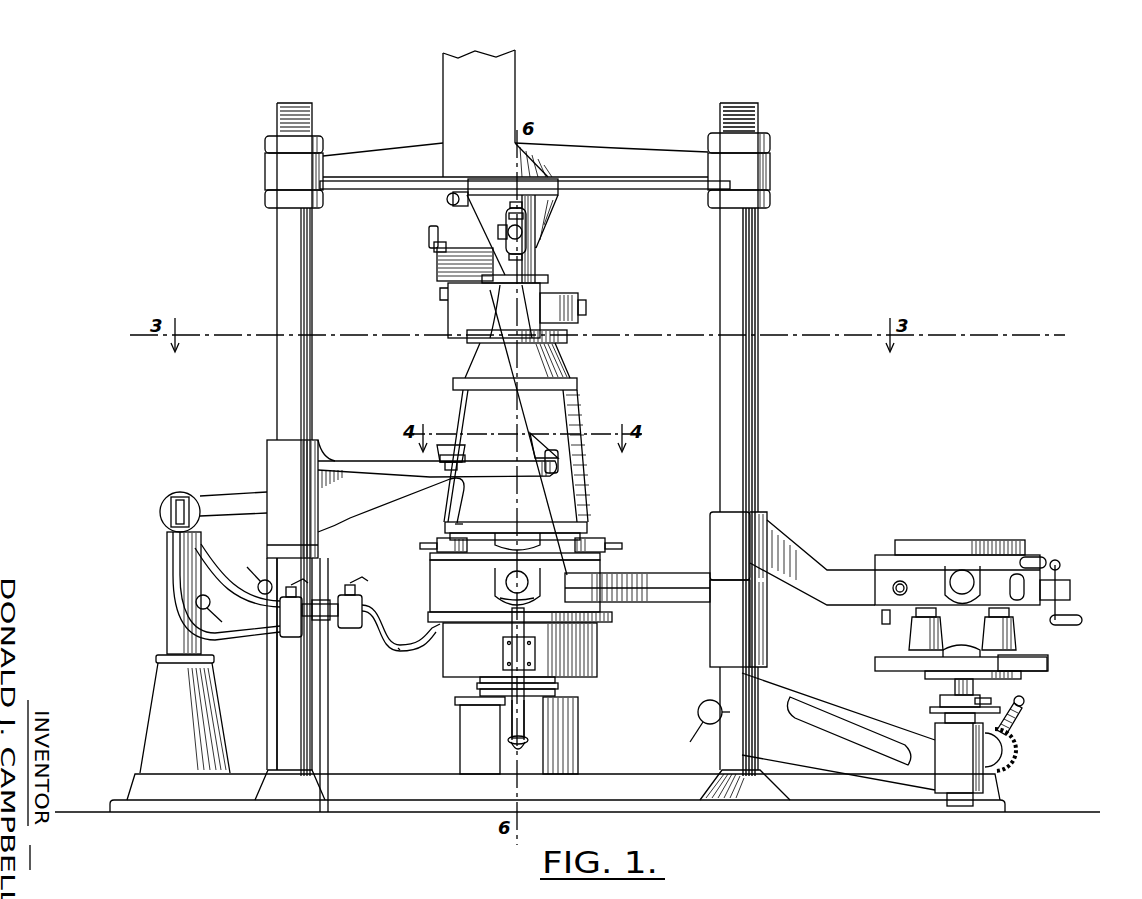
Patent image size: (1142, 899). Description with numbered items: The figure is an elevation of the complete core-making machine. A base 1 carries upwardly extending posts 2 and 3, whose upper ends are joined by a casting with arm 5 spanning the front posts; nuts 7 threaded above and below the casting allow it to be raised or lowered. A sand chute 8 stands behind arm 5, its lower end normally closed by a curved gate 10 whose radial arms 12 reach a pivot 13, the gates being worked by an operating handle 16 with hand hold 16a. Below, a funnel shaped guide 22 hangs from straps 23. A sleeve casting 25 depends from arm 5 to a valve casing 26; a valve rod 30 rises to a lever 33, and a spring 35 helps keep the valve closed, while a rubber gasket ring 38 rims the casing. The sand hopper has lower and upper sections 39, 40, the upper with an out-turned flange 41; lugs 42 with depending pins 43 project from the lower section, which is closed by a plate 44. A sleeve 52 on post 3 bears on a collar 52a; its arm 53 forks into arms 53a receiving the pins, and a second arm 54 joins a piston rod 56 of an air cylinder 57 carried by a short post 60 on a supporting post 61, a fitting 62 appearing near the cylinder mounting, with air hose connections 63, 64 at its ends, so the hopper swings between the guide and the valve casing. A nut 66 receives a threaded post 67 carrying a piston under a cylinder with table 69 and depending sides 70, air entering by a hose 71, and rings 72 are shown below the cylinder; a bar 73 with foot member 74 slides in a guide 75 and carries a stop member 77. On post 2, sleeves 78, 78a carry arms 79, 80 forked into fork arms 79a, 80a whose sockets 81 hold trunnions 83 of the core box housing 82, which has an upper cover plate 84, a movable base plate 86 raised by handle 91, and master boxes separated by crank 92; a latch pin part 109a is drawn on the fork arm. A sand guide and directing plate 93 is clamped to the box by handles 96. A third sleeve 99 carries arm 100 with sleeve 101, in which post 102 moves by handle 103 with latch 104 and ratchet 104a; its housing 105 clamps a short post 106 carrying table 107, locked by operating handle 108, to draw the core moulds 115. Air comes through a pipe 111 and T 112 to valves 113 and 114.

The base 1 is at (425, 800).
The post 2 is at (748, 442).
The post 3 is at (313, 402).
The arm 5 is at (556, 150).
The nuts 7 is at (265, 140).
The sand chute 8 is at (504, 84).
The curved gate 10 is at (437, 266).
The radial arms 12 is at (434, 250).
The pivot 13 is at (429, 236).
The operating handle 16 is at (458, 194).
The hand hold 16a is at (447, 201).
The funnel shaped guide 22 is at (448, 320).
The straps 23 is at (440, 292).
The sleeve casting 25 is at (540, 264).
The valve casing 26 is at (506, 306).
The valve rod 30 is at (528, 245).
The lever 33 is at (505, 233).
The spring 35 is at (523, 215).
The rubber gasket ring 38 is at (585, 331).
The lower section of sand hopper 39 is at (588, 500).
The upper section of sand hopper 40 is at (563, 364).
The out-turned flange 41 is at (567, 341).
The lugs 42 is at (452, 445).
The pins 43 is at (465, 457).
The plate 44 is at (455, 518).
The sleeve 52 is at (280, 458).
The collar 52a is at (285, 556).
The arm 53 is at (394, 487).
The fork arms 53a is at (437, 471).
The second arm 54 is at (226, 498).
The piston rod 56 is at (182, 496).
The air cylinder 57 is at (163, 507).
The short post 60 is at (173, 580).
The supporting post 61 is at (170, 618).
The valve 62 is at (208, 612).
The air hose connection 63 is at (210, 573).
The air hose connection 64 is at (172, 658).
The nut 66 is at (468, 703).
The threaded post 67 is at (578, 706).
The table 69 is at (428, 632).
The depending sides 70 is at (596, 672).
The hose 71 is at (403, 652).
The rings 72 is at (578, 690).
The bar 73 is at (512, 714).
The foot member 74 is at (510, 738).
The guide 75 is at (503, 661).
The stop member 77 is at (512, 618).
The sleeve 78 is at (764, 640).
The sleeve 78a is at (762, 532).
The arm 79 is at (640, 604).
The fork arms 79a is at (622, 604).
The arm 80 is at (812, 575).
The fork arms 80a is at (868, 585).
The sockets 81 is at (497, 596).
The outer housing 82 is at (388, 640).
The trunnions 83 is at (510, 581).
The upper cover plate 84 is at (600, 557).
The movable base plate 86 is at (995, 540).
The handle 91 is at (1042, 558).
The crank 92 is at (1062, 590).
The sand guide and directing plate 93 is at (590, 531).
The handle 96 is at (612, 547).
The third sleeve 99 is at (730, 748).
The arm 100 is at (870, 765).
The sleeve 101 is at (950, 778).
The post 102 is at (945, 712).
The handle 103 is at (1024, 724).
The latch 104 is at (1018, 740).
The ratchet 104a is at (1010, 760).
The housing 105 is at (930, 698).
The short post 106 is at (974, 685).
The table 107 is at (1022, 673).
The operating handle 108 is at (992, 700).
The bushing 109a is at (895, 594).
The pipe 111 is at (328, 718).
The T 112 is at (303, 598).
The valve 113 is at (362, 602).
The compound valve 114 is at (290, 630).
The core moulds 115 is at (946, 628).